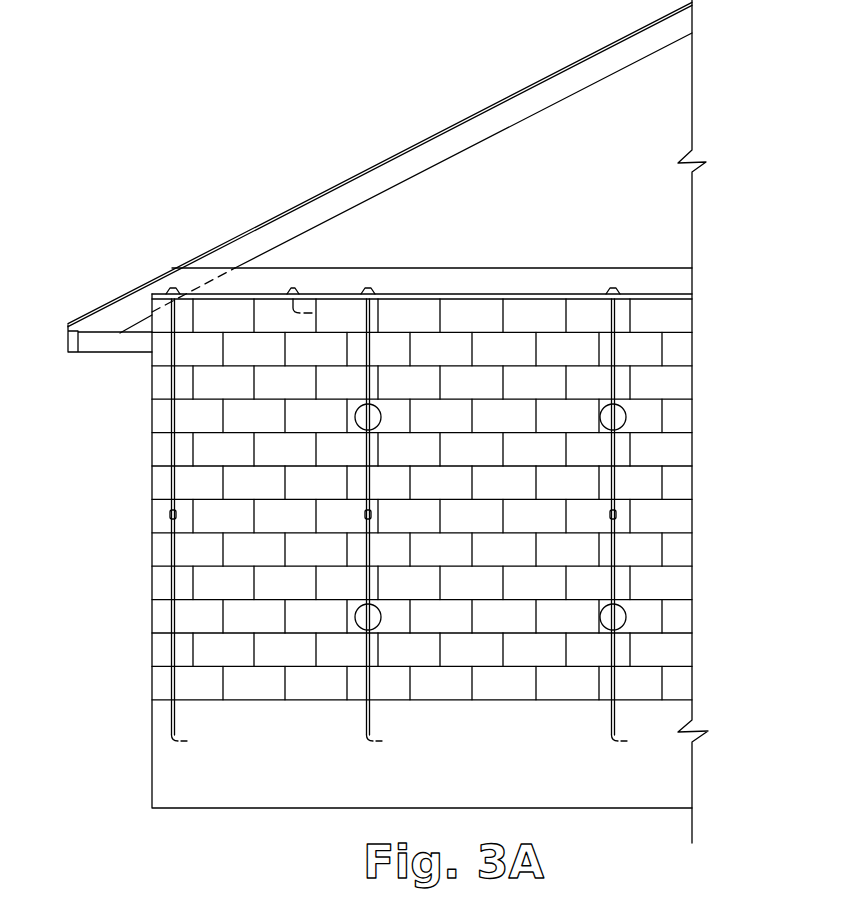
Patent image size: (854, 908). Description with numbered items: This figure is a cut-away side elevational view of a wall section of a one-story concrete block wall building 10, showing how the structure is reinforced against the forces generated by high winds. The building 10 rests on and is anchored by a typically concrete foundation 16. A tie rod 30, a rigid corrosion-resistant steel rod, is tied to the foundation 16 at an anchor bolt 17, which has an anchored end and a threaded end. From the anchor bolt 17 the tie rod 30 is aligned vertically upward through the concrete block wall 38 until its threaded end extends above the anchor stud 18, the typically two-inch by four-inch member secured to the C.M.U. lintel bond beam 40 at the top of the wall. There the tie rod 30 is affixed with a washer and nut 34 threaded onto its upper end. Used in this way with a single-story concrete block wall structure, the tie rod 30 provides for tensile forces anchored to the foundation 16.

The building structure 10 is at (712, 523).
The foundation 16 is at (484, 777).
The anchor bolt 17 is at (289, 310).
The anchor stud 18 is at (696, 297).
The tie rod 30 is at (366, 579).
The nut 34 is at (171, 291).
The concrete block wall 38 is at (508, 512).
The C.M.U. lintel bond beam 40 is at (540, 345).